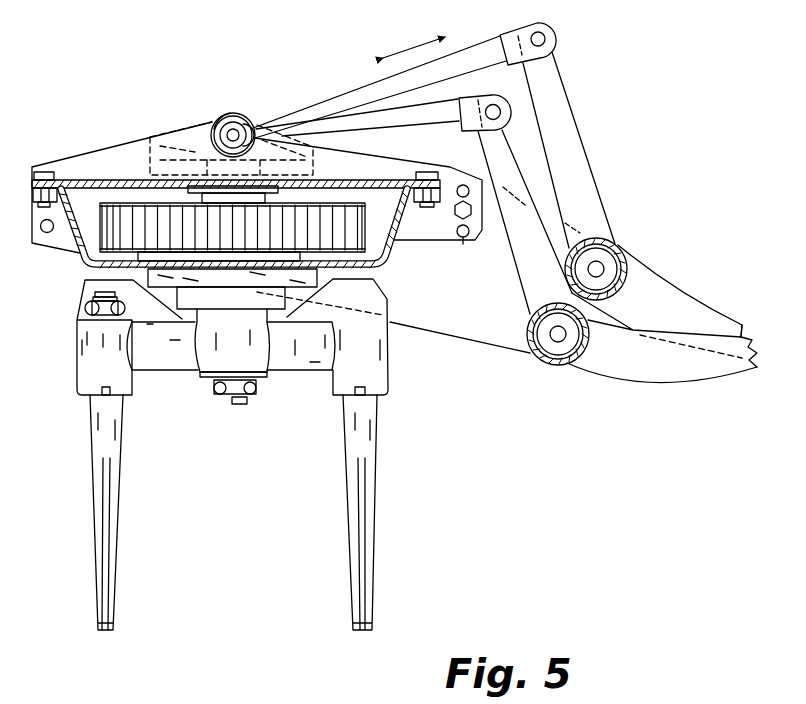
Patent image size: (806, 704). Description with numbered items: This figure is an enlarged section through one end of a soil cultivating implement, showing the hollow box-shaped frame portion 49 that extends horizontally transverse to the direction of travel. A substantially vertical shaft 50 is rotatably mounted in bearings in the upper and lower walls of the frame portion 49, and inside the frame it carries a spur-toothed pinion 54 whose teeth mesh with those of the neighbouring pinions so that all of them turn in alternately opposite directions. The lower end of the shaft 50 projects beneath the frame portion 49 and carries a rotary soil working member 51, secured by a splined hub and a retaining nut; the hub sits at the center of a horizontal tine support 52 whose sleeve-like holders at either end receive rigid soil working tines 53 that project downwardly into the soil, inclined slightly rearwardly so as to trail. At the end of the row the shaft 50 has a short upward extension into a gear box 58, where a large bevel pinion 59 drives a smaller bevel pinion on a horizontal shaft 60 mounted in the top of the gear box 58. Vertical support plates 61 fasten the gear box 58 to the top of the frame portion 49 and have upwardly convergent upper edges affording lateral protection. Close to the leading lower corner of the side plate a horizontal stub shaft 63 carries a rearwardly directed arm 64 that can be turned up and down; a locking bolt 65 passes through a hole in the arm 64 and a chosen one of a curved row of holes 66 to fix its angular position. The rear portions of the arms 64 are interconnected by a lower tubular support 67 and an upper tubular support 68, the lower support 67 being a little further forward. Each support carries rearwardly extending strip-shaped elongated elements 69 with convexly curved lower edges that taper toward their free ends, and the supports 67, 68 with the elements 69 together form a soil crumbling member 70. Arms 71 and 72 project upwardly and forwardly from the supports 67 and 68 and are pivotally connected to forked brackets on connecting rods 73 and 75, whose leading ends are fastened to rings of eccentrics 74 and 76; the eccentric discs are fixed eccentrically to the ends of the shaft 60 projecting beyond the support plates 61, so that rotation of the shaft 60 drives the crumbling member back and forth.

The hollow box-shaped frame portion 49 is at (76, 263).
The shaft 50 is at (230, 408).
The rotary soil working member 51 is at (246, 471).
The tine support 52 is at (185, 363).
The soil working tine 53 is at (113, 567).
The pinion 54 is at (127, 212).
The gear box 58 is at (314, 172).
The large bevel pinion 59 is at (146, 162).
The horizontal shaft 60 is at (233, 135).
The support plate 61 is at (92, 157).
The stub shaft 63 is at (44, 233).
The arm 64 is at (470, 332).
The locking bolt 65 is at (456, 215).
The hole 66 is at (462, 238).
The lower tubular support 67 is at (529, 329).
The upper tubular support 68 is at (621, 252).
The elongated element 69 is at (662, 296).
The soil crumbling member 70 is at (740, 290).
The arm 71 is at (492, 143).
The arm 72 is at (560, 97).
The connecting rod 73 is at (411, 116).
The eccentric 74 is at (247, 118).
The connecting rod 75 is at (370, 87).
The eccentric 76 is at (217, 121).